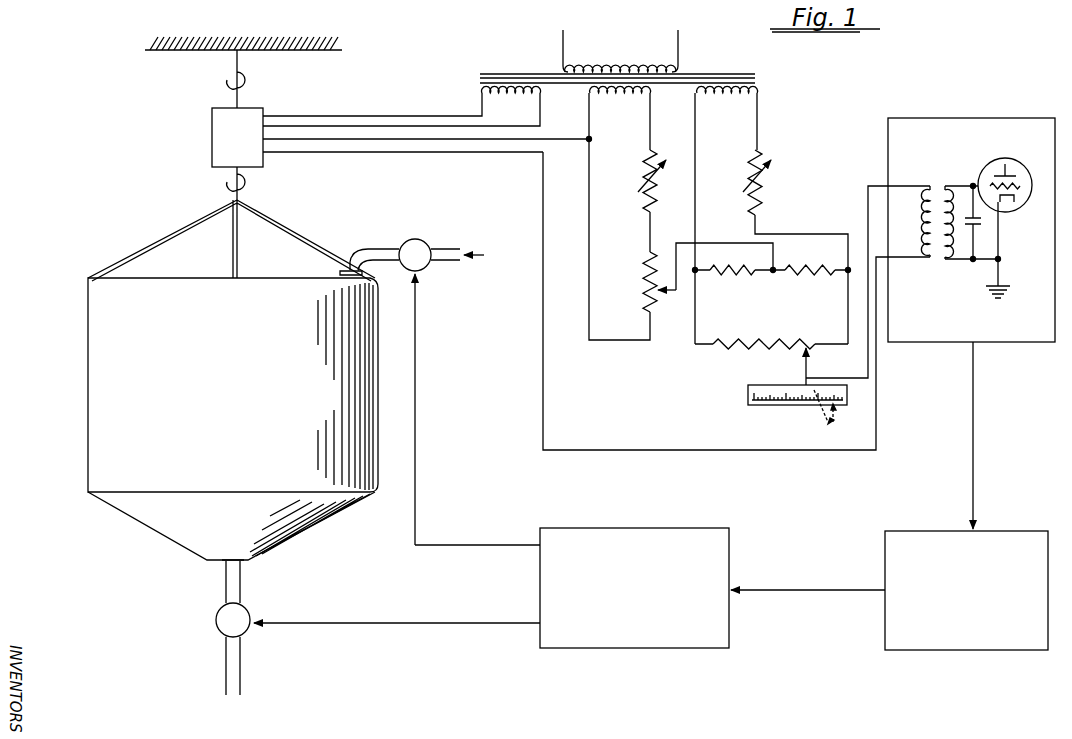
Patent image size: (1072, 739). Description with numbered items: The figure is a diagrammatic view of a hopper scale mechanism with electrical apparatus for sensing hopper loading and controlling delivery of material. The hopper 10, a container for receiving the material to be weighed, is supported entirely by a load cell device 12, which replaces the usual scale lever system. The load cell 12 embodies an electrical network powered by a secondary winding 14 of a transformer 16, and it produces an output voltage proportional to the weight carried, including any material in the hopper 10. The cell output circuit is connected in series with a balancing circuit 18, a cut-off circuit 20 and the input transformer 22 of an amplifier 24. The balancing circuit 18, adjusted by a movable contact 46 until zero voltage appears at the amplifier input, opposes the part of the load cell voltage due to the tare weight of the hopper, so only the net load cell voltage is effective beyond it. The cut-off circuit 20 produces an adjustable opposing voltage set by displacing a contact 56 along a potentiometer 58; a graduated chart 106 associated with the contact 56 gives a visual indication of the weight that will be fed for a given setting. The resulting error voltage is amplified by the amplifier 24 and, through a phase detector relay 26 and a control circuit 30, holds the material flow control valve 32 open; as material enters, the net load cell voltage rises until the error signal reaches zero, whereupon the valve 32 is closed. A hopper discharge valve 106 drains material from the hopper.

The hopper 10 is at (86, 368).
The load cell device 12 is at (212, 131).
The secondary winding 14 is at (480, 93).
The transformer 16 is at (506, 70).
The balancing circuit 18 is at (655, 131).
The cut-off circuit 20 is at (762, 131).
The input transformer 22 is at (922, 186).
The amplifier 24 is at (971, 297).
The phase detector relay 26 is at (1010, 527).
The control circuit 30 is at (733, 537).
The material flow control valve 32 is at (412, 239).
The movable contact 46 is at (674, 302).
The contact 56 is at (802, 370).
The potentiometer 58 is at (806, 342).
The graduated chart / hopper discharge valve 106 is at (215, 624).